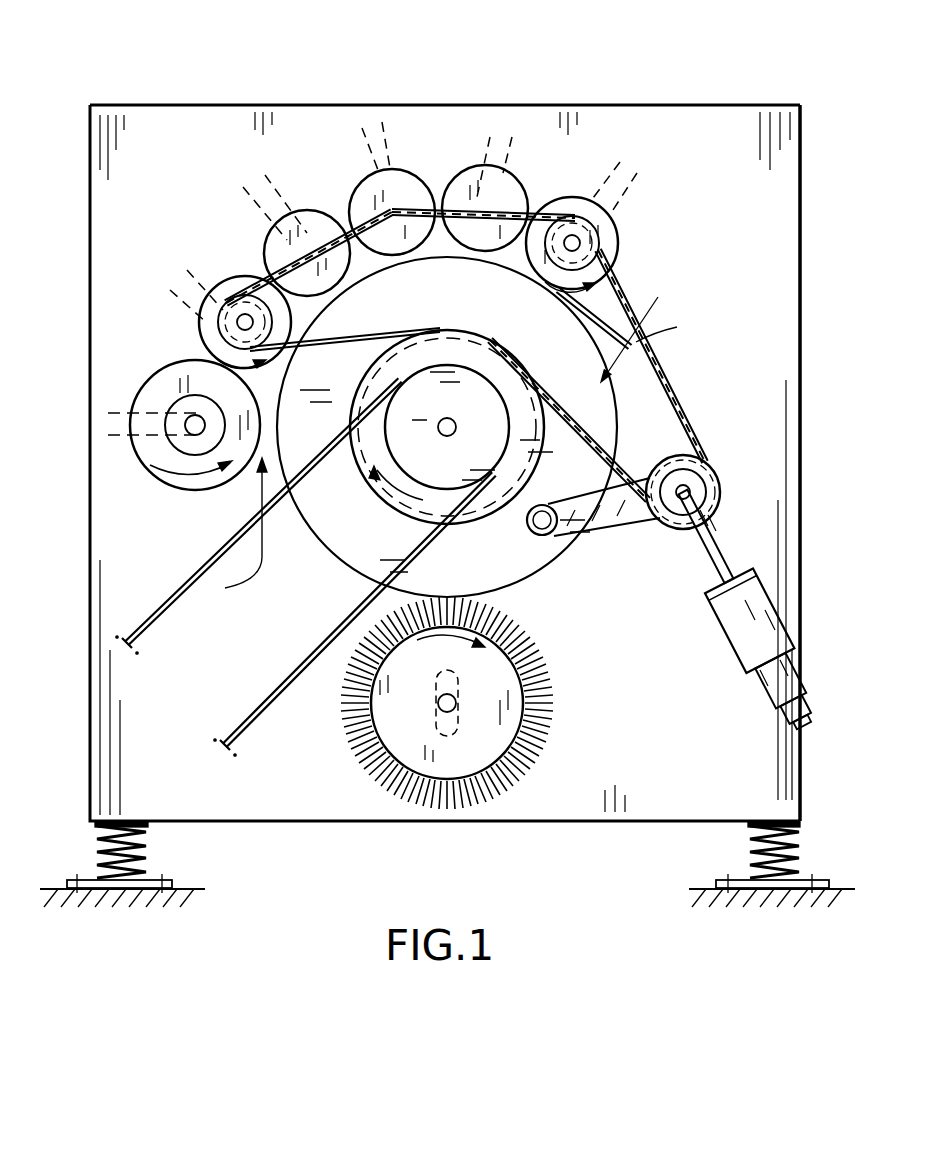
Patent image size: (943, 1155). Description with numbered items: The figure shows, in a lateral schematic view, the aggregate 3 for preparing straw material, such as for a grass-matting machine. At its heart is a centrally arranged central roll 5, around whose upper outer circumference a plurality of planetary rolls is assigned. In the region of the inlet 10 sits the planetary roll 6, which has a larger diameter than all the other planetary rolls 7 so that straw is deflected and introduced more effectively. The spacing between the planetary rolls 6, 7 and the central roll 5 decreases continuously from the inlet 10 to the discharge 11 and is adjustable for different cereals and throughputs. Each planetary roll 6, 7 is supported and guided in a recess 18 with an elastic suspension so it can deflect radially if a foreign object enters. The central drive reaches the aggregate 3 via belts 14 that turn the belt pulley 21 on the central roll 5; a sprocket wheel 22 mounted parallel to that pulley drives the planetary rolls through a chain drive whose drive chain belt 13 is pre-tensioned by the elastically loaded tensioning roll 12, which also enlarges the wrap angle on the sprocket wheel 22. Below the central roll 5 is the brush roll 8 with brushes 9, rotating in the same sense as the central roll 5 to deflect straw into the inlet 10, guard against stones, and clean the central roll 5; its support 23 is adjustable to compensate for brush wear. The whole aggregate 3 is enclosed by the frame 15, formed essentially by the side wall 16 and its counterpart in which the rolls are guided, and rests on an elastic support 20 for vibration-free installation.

The aggregate 3 is at (157, 97).
The central roll 5 is at (352, 560).
The planetary roll 6 is at (150, 397).
The planetary rolls 7 is at (215, 322).
The brush roll 8 is at (405, 752).
The brushes 9 is at (525, 760).
The inlet 10 is at (237, 498).
The discharge 11 is at (710, 409).
The tensioning roll 12 is at (720, 512).
The drive chain belt 13 is at (653, 340).
The belts 14 is at (130, 643).
The frame 15 is at (680, 105).
The side wall 16 is at (752, 127).
The recess 18 is at (385, 165).
The elastic support 20 is at (121, 890).
The belt pulley 21 is at (480, 395).
The sprocket wheel 22 is at (492, 512).
The support 23 is at (437, 714).